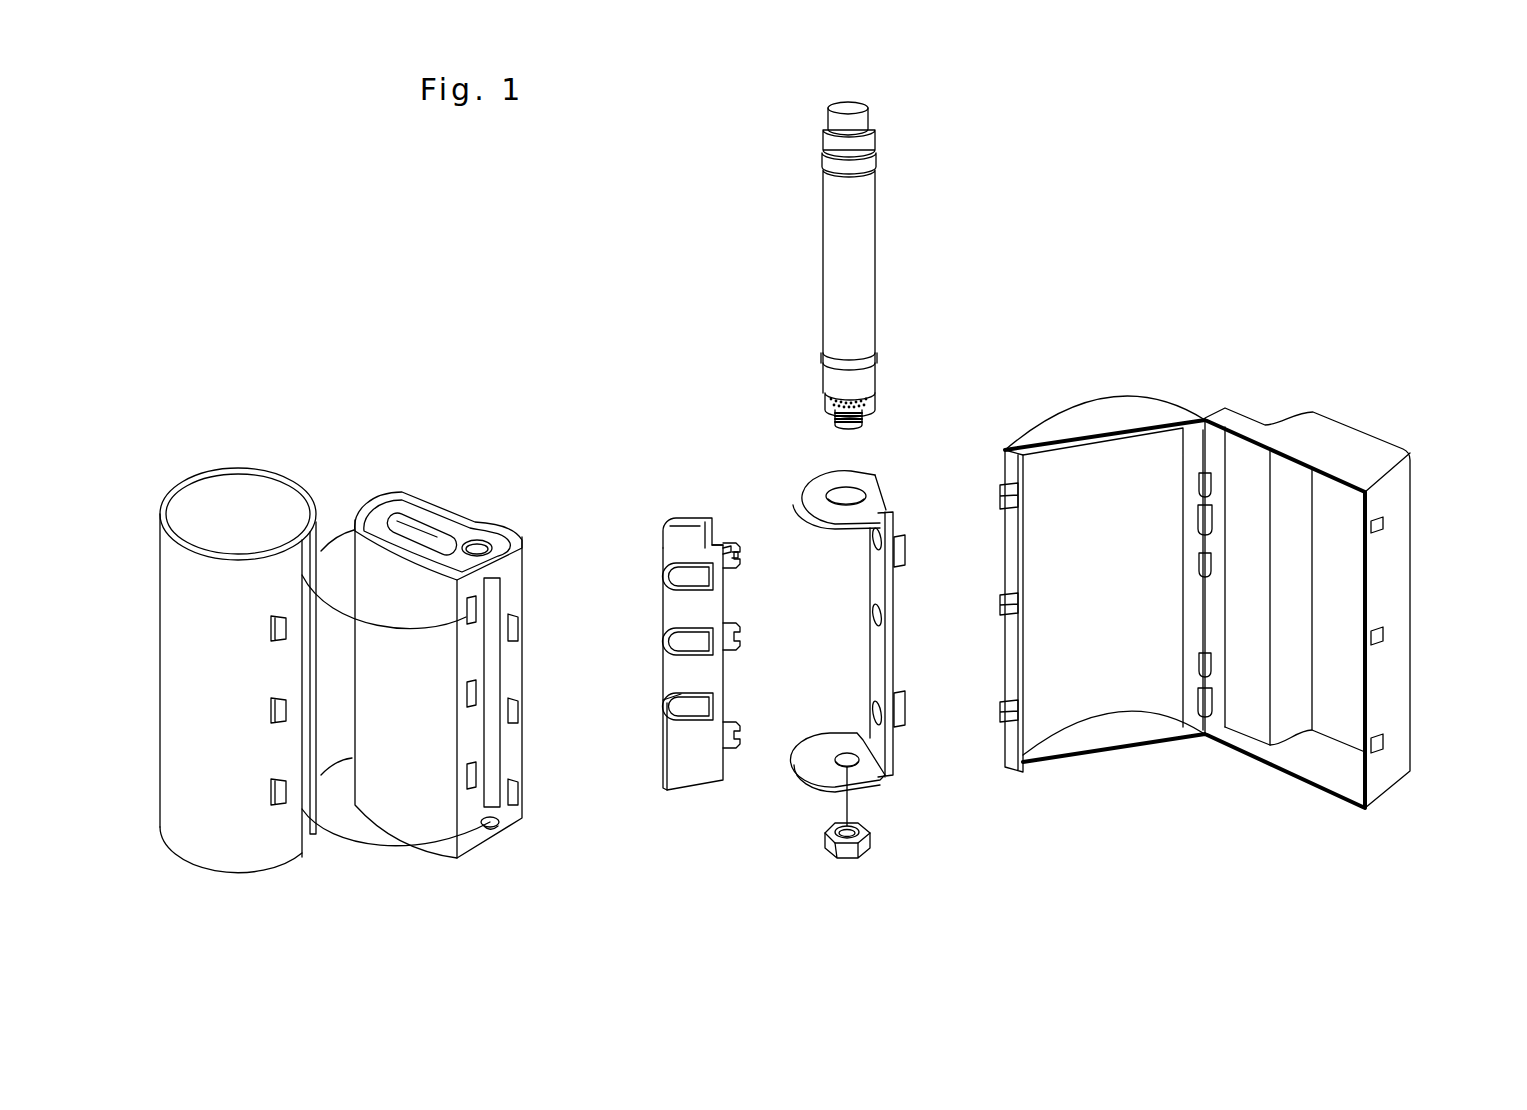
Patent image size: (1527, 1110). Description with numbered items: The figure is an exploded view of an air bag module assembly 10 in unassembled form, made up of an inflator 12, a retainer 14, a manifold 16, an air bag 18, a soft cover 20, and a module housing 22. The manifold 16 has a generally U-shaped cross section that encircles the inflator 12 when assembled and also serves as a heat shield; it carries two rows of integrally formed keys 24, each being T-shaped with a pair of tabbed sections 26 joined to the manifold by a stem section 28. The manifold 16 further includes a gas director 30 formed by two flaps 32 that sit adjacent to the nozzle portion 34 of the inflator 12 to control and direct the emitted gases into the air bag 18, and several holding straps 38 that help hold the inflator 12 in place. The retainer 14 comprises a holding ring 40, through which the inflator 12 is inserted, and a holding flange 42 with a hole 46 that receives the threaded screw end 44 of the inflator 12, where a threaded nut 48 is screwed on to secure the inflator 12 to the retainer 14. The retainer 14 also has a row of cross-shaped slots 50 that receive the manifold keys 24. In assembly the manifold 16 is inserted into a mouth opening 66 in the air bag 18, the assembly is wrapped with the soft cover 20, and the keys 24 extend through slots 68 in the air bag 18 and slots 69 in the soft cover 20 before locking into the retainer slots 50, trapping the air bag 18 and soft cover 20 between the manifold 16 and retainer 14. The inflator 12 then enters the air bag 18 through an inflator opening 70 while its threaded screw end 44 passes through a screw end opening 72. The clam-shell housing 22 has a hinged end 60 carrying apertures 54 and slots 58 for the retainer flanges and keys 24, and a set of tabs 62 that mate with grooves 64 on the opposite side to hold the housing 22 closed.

The module assembly 10 is at (702, 272).
The inflator 12 is at (848, 103).
The retainer 14 is at (862, 783).
The manifold 16 is at (692, 516).
The air bag 18 is at (395, 491).
The soft cover 20 is at (253, 469).
The module housing 22 is at (1113, 401).
The keys 24 is at (740, 735).
The tabbed sections 26 is at (729, 544).
The stem section 28 is at (738, 560).
The gas director 30 is at (681, 773).
The flaps 32 is at (675, 731).
The nozzle portion 34 is at (830, 400).
The holding straps 38 is at (668, 705).
The holding ring 40 is at (808, 473).
The holding flange 42 is at (864, 792).
The threaded screw end 44 is at (858, 425).
The hole 46 is at (834, 768).
The threaded nut 48 is at (849, 858).
The slots 50 is at (873, 712).
The apertures 54 is at (1202, 716).
The slots 58 is at (1199, 665).
The hinged end 60 is at (1205, 420).
The tabs 62 is at (1383, 745).
The grooves 64 is at (1003, 705).
The mouth opening 66 is at (493, 592).
The slots 68 is at (467, 776).
The slots 69 is at (271, 792).
The inflator opening 70 is at (477, 542).
The screw end opening 72 is at (493, 828).